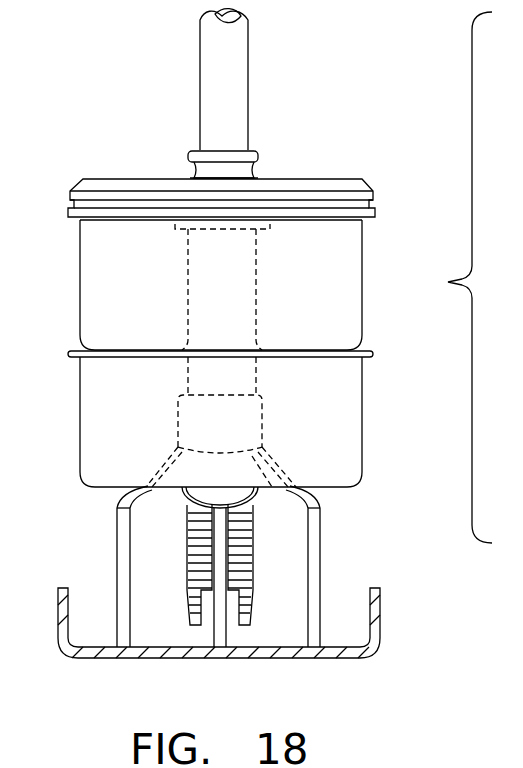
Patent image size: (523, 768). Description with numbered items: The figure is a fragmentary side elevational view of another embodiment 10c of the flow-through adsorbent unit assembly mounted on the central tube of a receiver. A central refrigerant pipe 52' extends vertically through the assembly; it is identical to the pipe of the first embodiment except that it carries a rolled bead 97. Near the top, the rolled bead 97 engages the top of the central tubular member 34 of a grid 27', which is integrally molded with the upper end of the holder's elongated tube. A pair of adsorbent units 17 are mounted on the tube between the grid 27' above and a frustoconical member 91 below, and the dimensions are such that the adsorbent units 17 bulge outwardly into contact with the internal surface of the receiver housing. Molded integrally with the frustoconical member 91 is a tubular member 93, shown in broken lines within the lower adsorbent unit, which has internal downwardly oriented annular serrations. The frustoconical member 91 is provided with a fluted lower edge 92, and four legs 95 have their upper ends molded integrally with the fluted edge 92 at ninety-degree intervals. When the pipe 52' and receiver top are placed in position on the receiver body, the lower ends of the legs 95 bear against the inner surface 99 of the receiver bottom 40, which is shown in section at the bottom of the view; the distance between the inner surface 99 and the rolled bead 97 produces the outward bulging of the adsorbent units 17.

The pipe 52' is at (270, 79).
The embodiment 10c is at (333, 100).
The rolled bead 97 is at (195, 146).
The central tubular member 34 is at (192, 170).
The grid 27' is at (239, 176).
The adsorbent units 17 is at (362, 312).
The tubular member 93 is at (270, 425).
The frustoconical member 91 is at (326, 498).
The fluted lower edge 92 is at (132, 492).
The legs 95 is at (117, 545).
The inner surface 99 is at (97, 640).
The receiver bottom 40 is at (265, 658).